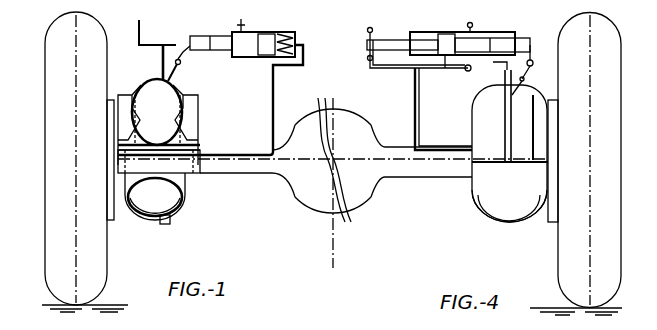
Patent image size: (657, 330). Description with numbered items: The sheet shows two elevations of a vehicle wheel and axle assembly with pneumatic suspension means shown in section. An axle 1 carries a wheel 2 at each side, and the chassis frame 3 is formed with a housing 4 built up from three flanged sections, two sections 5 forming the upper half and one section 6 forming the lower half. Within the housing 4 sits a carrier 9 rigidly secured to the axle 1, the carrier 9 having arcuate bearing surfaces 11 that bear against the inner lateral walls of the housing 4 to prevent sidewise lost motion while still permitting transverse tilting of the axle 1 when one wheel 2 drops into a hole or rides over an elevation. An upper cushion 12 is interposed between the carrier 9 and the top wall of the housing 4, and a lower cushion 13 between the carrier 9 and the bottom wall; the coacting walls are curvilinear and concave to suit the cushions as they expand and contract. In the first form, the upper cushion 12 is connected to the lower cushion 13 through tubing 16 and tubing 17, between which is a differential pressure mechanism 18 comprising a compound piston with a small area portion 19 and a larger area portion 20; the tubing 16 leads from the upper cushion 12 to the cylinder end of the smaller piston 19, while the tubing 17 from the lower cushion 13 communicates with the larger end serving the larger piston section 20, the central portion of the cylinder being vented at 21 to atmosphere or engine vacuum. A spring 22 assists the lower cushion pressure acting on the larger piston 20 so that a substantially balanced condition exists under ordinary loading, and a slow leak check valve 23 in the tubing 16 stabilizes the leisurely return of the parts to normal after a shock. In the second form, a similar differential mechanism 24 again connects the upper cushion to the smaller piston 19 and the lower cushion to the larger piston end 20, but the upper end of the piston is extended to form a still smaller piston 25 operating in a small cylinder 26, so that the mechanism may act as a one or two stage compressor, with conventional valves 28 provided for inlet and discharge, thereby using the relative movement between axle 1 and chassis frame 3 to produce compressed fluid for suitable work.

In FIG. 1, the axle 1 is at (265, 171).
In FIG. 1, the wheel 2 is at (45, 272).
In FIG. 4, the wheel 2 is at (614, 290).
In FIG. 1, the chassis frame 3 is at (158, 45).
In FIG. 4, the chassis frame 3 is at (498, 64).
In FIG. 1, the housing 4 is at (183, 211).
In FIG. 4, the housing 4 is at (483, 208).
In FIG. 1, the upper housing sections 5 is at (137, 84).
In FIG. 4, the upper housing sections 5 is at (472, 135).
In FIG. 1, the lower housing section 6 is at (146, 216).
In FIG. 4, the lower housing section 6 is at (500, 213).
In FIG. 1, the carrier 9 is at (190, 128).
In FIG. 1, the arcuate bearing surfaces 11 is at (190, 138).
In FIG. 1, the upper cushion 12 is at (157, 112).
In FIG. 1, the lower cushion 13 is at (155, 197).
In FIG. 1, the tubing 16 is at (178, 74).
In FIG. 1, the tubing 17 is at (272, 103).
In FIG. 4, the tubing 17 is at (416, 122).
In FIG. 1, the differential pressure mechanism 18 is at (250, 57).
In FIG. 1, the small area piston portion 19 is at (201, 37).
In FIG. 4, the small area piston portion 19 is at (500, 45).
In FIG. 1, the larger area piston portion 20 is at (264, 34).
In FIG. 4, the larger area piston portion 20 is at (452, 33).
In FIG. 1, the vent 21 is at (233, 24).
In FIG. 1, the spring 22 is at (291, 36).
In FIG. 4, the spring 22 is at (534, 63).
In FIG. 1, the slow leak check valve 23 is at (182, 63).
In FIG. 4, the differential mechanism 24 is at (445, 70).
In FIG. 4, the still smaller piston 25 is at (418, 52).
In FIG. 4, the small cylinder 26 is at (362, 84).
In FIG. 4, the conventional valves 28 is at (367, 30).